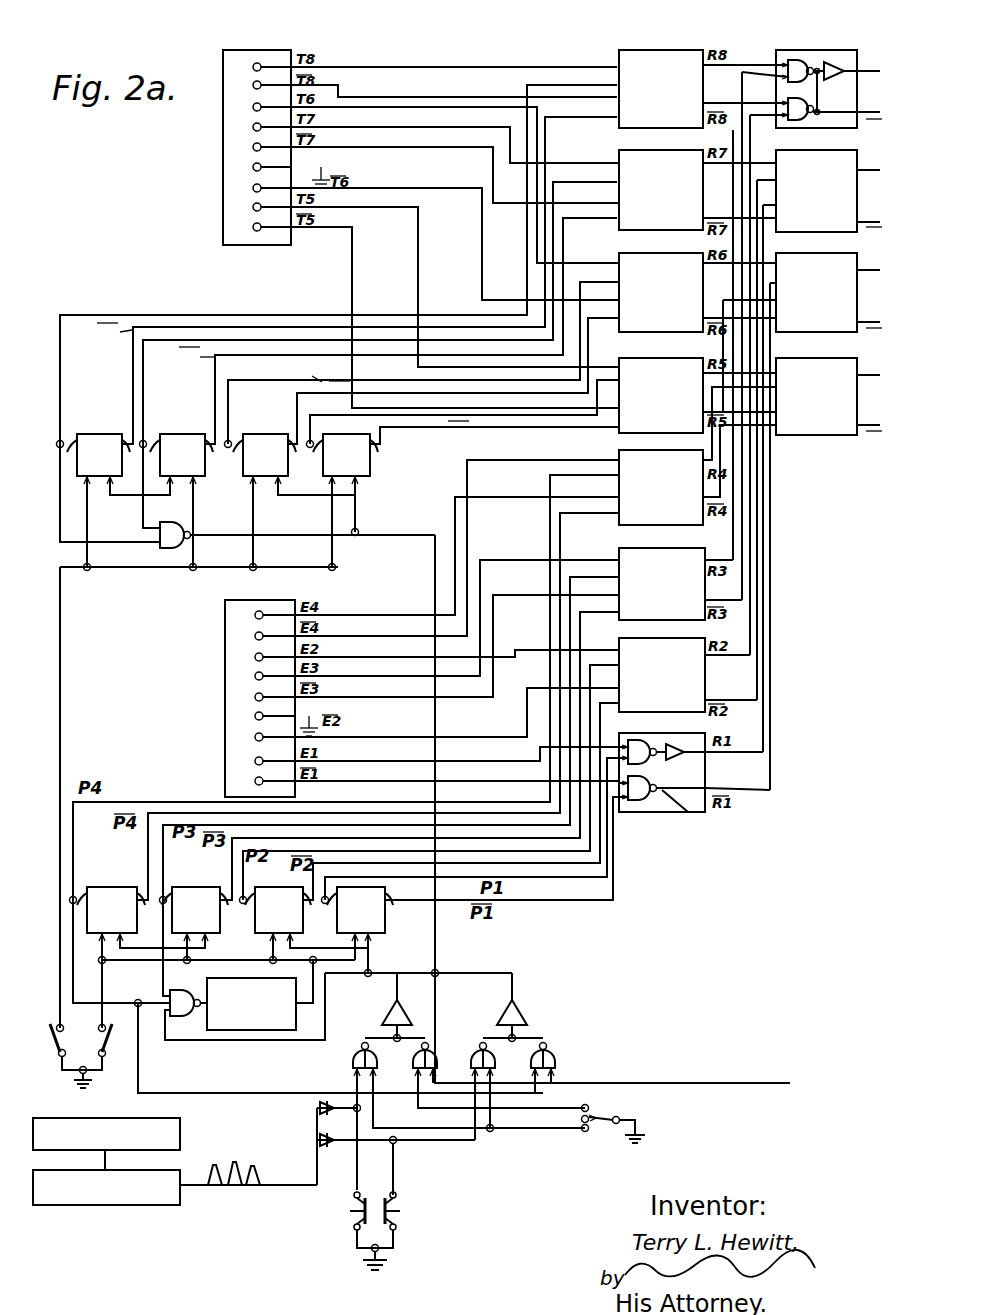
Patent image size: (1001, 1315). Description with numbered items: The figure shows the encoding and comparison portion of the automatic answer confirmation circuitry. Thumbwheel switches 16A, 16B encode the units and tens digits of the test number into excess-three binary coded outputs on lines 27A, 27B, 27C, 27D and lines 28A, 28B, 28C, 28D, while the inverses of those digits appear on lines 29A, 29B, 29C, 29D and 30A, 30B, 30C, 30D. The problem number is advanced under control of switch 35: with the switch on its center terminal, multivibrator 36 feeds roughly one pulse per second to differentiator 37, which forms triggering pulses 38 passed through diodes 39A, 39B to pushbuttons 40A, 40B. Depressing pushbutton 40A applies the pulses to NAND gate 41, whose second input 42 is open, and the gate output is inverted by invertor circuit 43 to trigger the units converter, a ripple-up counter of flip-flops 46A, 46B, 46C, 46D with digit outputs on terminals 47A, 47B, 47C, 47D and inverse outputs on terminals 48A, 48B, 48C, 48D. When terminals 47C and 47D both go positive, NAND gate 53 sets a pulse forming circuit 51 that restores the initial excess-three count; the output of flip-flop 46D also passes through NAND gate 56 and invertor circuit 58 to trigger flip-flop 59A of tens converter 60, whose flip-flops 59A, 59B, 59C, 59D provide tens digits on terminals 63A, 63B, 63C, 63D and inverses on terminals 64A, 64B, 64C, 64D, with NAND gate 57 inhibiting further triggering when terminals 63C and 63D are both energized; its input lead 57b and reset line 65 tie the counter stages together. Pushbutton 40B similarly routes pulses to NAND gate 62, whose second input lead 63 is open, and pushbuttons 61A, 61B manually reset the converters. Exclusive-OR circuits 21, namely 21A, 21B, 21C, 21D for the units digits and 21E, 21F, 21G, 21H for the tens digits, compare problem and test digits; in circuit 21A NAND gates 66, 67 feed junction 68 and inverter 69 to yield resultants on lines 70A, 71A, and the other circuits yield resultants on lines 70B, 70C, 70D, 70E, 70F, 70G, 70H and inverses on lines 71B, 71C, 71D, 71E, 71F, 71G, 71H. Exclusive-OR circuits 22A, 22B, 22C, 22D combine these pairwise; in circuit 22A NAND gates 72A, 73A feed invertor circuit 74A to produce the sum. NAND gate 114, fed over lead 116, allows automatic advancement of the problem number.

The thumbwheel switch 16A is at (225, 692).
The thumbwheel switch 16B is at (223, 190).
The exclusive-OR circuit 21 is at (642, 52).
The exclusive-OR circuit 21A is at (678, 780).
The exclusive-OR circuit 21B is at (622, 641).
The exclusive-OR circuit 21C is at (622, 551).
The exclusive-OR circuit 21D is at (619, 490).
The exclusive-OR circuit 21E is at (620, 358).
The exclusive-OR circuit 21F is at (616, 260).
The exclusive-OR circuit 21G is at (616, 158).
The exclusive-OR circuit 21H is at (616, 60).
The exclusive-OR circuit 22A is at (834, 88).
The exclusive-OR circuit 22B is at (857, 192).
The exclusive-OR circuit 22C is at (857, 292).
The exclusive-OR circuit 22D is at (857, 395).
The line 27A is at (388, 764).
The line 27B is at (338, 658).
The line 27C is at (338, 678).
The line 27D is at (338, 615).
The line 28A is at (418, 213).
The line 28B is at (390, 108).
The line 28C is at (392, 128).
The line 28D is at (416, 67).
The line 29A is at (356, 777).
The line 29B is at (372, 712).
The line 29C is at (346, 699).
The line 29D is at (338, 637).
The line 30A is at (350, 233).
The line 30B is at (400, 186).
The line 30C is at (354, 147).
The line 30D is at (356, 97).
The switch 35 is at (605, 1116).
The multivibrator 36 is at (152, 1120).
The differentiator 37 is at (169, 1172).
The triggering pulses 38 is at (235, 1166).
The diode 39A is at (316, 1108).
The diode 39B is at (330, 1146).
The pushbutton 40A is at (353, 1216).
The pushbutton 40B is at (403, 1209).
The NAND gate 41 is at (352, 1062).
The second input 42 is at (377, 1068).
The invertor circuit 43 is at (402, 1014).
The flip-flop circuit 46A is at (360, 919).
The flip-flop circuit 46B is at (278, 919).
The flip-flop circuit 46C is at (195, 919).
The flip-flop circuit 46D is at (111, 919).
The terminal 47A is at (346, 887).
The terminal 47B is at (249, 888).
The terminal 47C is at (166, 888).
The terminal 47D is at (82, 888).
The terminal 48A is at (388, 898).
The terminal 48B is at (309, 890).
The terminal 48C is at (226, 892).
The terminal 48D is at (143, 890).
The pulse forming circuit 51 is at (264, 995).
The NAND gate 53 is at (183, 990).
The NAND gate 56 is at (556, 1062).
The NAND gate 57 is at (170, 526).
The gate input lead 57b is at (555, 1080).
The invertor circuit 58 is at (522, 1016).
The flip-flop circuit 59A is at (347, 464).
The flip-flop circuit 59B is at (266, 464).
The flip-flop circuit 59C is at (183, 464).
The flip-flop circuit 59D is at (100, 464).
The tens decimal digit converter 60 is at (150, 308).
The pushbutton 61A is at (105, 1062).
The pushbutton 61B is at (55, 1028).
The NAND gate 62 is at (436, 1060).
The second input lead 63 is at (488, 1078).
The terminal 63A is at (316, 436).
The terminal 63B is at (236, 430).
The terminal 63C is at (152, 430).
The terminal 63D is at (68, 430).
The terminal 64A is at (380, 444).
The terminal 64B is at (295, 440).
The terminal 64C is at (212, 440).
The terminal 64D is at (128, 440).
The reset line 65 is at (162, 570).
The NAND gate 66 is at (636, 812).
The NAND gate 67 is at (628, 735).
The junction 68 is at (684, 814).
The inverter circuit 69 is at (681, 764).
The line 70A is at (766, 736).
The line 70B is at (752, 642).
The line 70C is at (740, 548).
The line 70D is at (740, 462).
The line 70E is at (730, 370).
The line 70F is at (736, 262).
The line 70G is at (754, 162).
The line 70H is at (752, 64).
The line 71A is at (772, 776).
The line 71B is at (760, 682).
The line 71C is at (746, 584).
The line 71D is at (720, 497).
The line 71E is at (760, 425).
The line 71F is at (724, 314).
The line 71G is at (733, 202).
The line 71H is at (736, 104).
The NAND gate 72A is at (798, 121).
The NAND gate 73A is at (793, 58).
The invertor circuit 74A is at (834, 60).
The NAND gate 114 is at (430, 1058).
The lead 116 is at (612, 809).